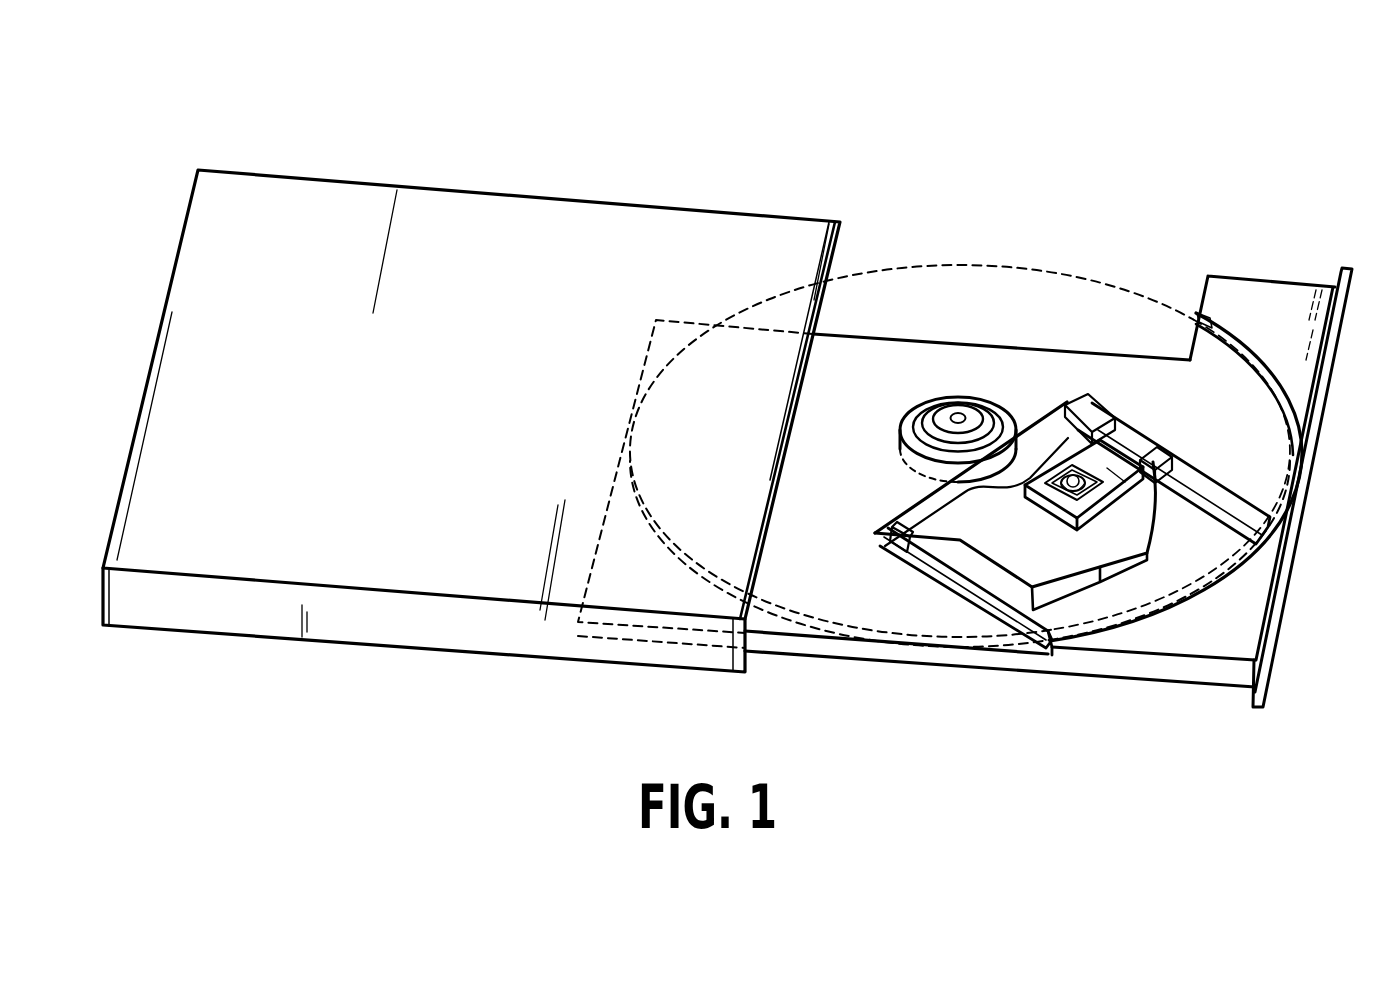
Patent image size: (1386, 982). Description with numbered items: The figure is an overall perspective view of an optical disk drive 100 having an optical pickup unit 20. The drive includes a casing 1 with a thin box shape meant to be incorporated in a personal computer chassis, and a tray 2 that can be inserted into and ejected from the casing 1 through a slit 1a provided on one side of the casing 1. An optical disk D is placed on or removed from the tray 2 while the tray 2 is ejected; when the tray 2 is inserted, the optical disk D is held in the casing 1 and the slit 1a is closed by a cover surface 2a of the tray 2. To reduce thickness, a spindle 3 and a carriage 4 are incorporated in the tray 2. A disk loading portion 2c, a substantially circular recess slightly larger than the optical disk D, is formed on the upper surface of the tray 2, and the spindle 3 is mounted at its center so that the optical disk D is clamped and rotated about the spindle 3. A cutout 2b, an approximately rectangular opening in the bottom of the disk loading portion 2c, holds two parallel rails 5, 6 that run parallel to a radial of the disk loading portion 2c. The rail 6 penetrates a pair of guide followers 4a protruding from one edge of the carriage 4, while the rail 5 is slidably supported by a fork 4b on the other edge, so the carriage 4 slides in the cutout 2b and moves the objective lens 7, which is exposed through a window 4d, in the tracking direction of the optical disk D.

The optical disk drive 100 is at (757, 134).
The casing 1 is at (374, 182).
The slit 1a is at (843, 268).
The optical pickup unit 20 is at (1052, 699).
The tray 2 is at (1247, 277).
The cover surface 2a is at (1342, 358).
The cutout 2b is at (1030, 432).
The disk loading portion 2c is at (948, 355).
The optical disk D is at (1058, 272).
The spindle 3 is at (910, 413).
The carriage 4 is at (1138, 513).
The guide followers 4a is at (1103, 420).
The fork 4b is at (913, 550).
The window 4d is at (1042, 512).
The rail 5 is at (968, 585).
The rail 6 is at (1203, 497).
The objective lens 7 is at (1073, 497).